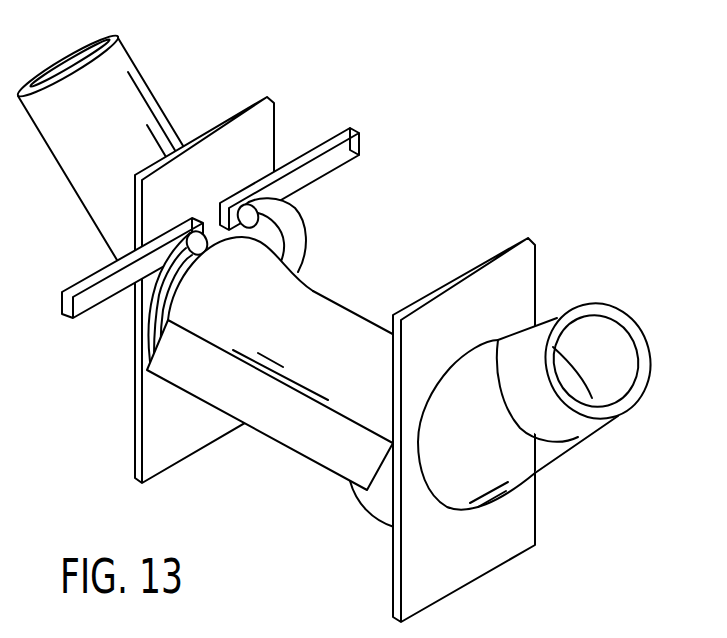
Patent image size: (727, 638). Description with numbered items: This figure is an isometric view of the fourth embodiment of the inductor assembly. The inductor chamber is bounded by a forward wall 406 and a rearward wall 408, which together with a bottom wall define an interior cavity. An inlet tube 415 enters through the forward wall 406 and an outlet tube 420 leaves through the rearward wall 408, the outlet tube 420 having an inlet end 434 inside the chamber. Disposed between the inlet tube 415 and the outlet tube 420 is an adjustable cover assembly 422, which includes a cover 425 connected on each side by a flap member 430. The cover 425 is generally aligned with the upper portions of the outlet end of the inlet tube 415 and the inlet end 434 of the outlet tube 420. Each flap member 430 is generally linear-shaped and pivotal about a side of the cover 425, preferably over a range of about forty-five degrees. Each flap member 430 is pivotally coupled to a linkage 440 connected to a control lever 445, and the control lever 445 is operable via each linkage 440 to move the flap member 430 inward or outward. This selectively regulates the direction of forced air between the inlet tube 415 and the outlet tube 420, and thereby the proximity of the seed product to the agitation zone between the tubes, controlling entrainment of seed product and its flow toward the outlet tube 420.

The inlet tube 415 is at (160, 89).
The control lever 445 is at (325, 142).
The linkage 440 is at (288, 239).
The adjustable cover assembly 422 is at (290, 351).
The cover 425 is at (373, 343).
The forward wall 406 is at (158, 445).
The flap member 430 is at (292, 423).
The inlet end 434 is at (367, 512).
The rearward wall 408 is at (468, 557).
The outlet tube 420 is at (594, 447).